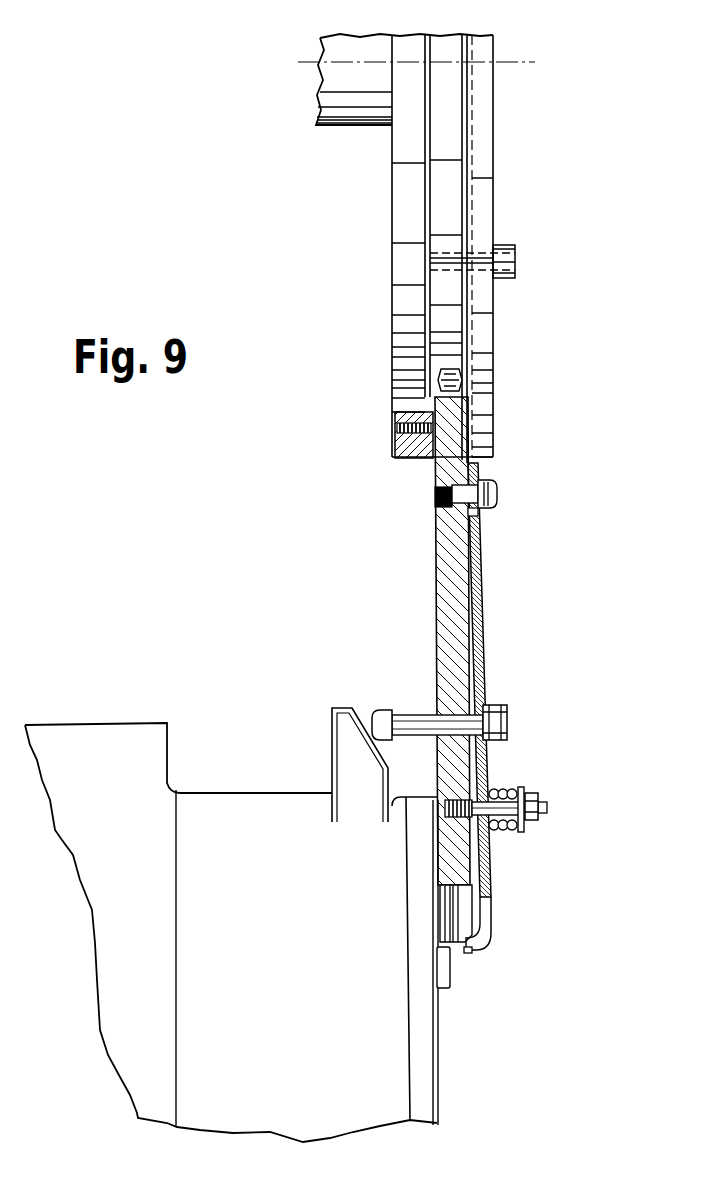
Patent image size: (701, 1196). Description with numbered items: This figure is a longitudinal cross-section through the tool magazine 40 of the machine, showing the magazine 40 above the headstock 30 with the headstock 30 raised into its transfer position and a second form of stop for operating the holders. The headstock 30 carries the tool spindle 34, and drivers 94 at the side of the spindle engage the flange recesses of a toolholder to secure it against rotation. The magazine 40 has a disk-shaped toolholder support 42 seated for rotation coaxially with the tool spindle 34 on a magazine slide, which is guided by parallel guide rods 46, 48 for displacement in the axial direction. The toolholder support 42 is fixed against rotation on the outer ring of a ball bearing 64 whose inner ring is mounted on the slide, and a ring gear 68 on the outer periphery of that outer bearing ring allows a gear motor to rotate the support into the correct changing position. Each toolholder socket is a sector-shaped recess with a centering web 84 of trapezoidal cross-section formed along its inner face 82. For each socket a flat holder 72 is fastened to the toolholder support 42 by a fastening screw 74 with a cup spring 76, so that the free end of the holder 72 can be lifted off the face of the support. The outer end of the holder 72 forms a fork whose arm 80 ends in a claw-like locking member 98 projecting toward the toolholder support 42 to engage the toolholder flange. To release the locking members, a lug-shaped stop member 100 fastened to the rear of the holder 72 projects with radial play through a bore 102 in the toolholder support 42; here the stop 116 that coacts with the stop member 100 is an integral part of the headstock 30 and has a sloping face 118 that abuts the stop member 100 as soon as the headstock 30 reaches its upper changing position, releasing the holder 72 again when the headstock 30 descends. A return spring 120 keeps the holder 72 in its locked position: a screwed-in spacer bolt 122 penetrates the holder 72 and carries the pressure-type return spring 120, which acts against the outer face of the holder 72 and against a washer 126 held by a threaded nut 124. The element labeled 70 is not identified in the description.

The headstock 30 is at (124, 712).
The tool spindle 34 is at (437, 1020).
The magazine 40 is at (530, 325).
The toolholder support 42 is at (435, 542).
The guide rod 46 is at (337, 112).
The guide rod 48 is at (354, 120).
The ball bearing 64 is at (467, 377).
The ring gear 68 is at (405, 462).
The carrier plate 70 is at (492, 656).
The holder 72 is at (480, 600).
The fastening screw 74 is at (493, 487).
The cup spring 76 is at (479, 517).
The fork arm 80 is at (489, 913).
The inner face 82 is at (472, 902).
The centering web 84 is at (460, 912).
The driver 94 is at (443, 973).
The locking member 98 is at (469, 954).
The stop member 100 is at (403, 720).
The bore 102 is at (525, 745).
The stop 116 is at (343, 746).
The sloping face 118 is at (365, 710).
The return spring 120 is at (506, 786).
The spacer bolt 122 is at (547, 806).
The threaded nut 124 is at (524, 795).
The washer 126 is at (519, 833).